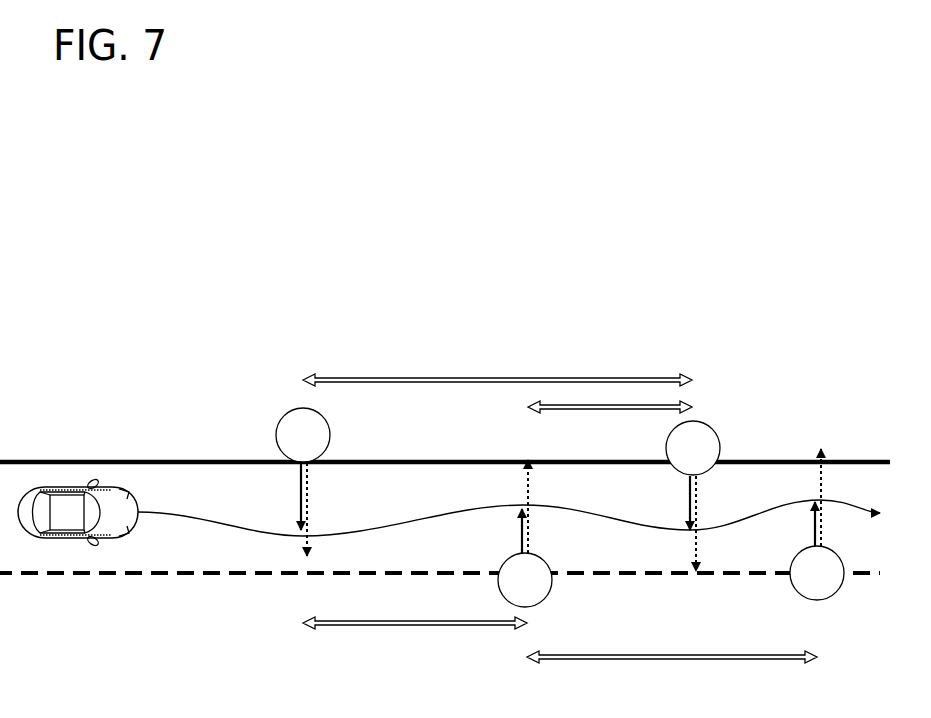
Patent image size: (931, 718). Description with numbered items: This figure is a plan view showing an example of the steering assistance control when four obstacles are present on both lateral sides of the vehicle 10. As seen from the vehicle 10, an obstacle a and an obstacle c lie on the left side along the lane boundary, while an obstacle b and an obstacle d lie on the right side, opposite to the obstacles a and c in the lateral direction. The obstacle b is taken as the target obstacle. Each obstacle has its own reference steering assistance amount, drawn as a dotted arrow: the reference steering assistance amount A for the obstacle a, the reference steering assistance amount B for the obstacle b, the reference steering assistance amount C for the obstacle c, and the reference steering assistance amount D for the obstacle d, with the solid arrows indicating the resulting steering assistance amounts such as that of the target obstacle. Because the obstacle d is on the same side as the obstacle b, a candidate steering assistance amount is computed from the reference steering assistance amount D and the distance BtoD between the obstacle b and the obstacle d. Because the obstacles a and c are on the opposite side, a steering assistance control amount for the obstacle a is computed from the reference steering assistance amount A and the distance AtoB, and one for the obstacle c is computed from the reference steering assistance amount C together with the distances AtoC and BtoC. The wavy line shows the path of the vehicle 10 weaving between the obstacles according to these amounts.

The vehicle 10 is at (71, 488).
The obstacle a is at (303, 435).
The obstacle b is at (525, 580).
The obstacle c is at (693, 448).
The obstacle d is at (817, 573).
The reference steering assistance amount A is at (300, 509).
The reference steering assistance amount B is at (520, 506).
The reference steering assistance amount C is at (690, 523).
The reference steering assistance amount D is at (815, 498).
The distance AtoC is at (497, 370).
The distance BtoC is at (610, 418).
The distance AtoB is at (415, 634).
The distance BtoD is at (672, 647).